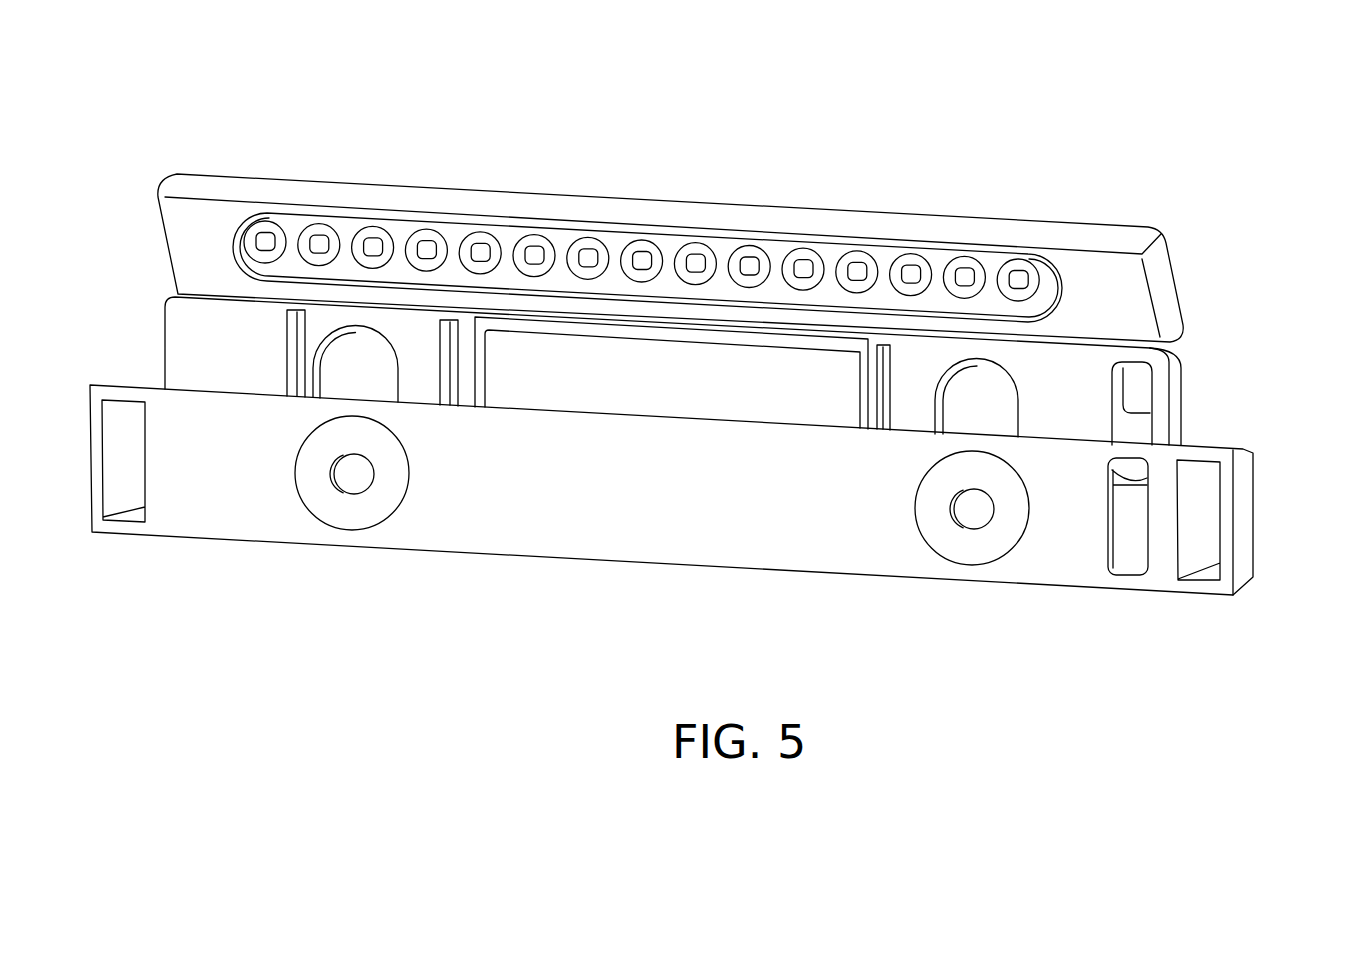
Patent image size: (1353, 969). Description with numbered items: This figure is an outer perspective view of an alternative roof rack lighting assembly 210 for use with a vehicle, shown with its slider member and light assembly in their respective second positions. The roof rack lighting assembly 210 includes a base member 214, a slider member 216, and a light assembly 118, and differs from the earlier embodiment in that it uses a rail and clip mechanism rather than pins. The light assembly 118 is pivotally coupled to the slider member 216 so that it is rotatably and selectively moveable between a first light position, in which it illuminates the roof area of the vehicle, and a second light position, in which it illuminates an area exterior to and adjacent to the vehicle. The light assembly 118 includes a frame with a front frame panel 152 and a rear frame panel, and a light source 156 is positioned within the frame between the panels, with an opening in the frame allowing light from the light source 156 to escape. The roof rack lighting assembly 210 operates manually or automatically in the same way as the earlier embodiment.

The roof rack lighting assembly 210 is at (150, 140).
The light assembly 118 is at (1180, 204).
The light source 156 is at (938, 216).
The front frame panel 152 is at (1136, 292).
The slider member 216 is at (1212, 382).
The base member 214 is at (1283, 478).